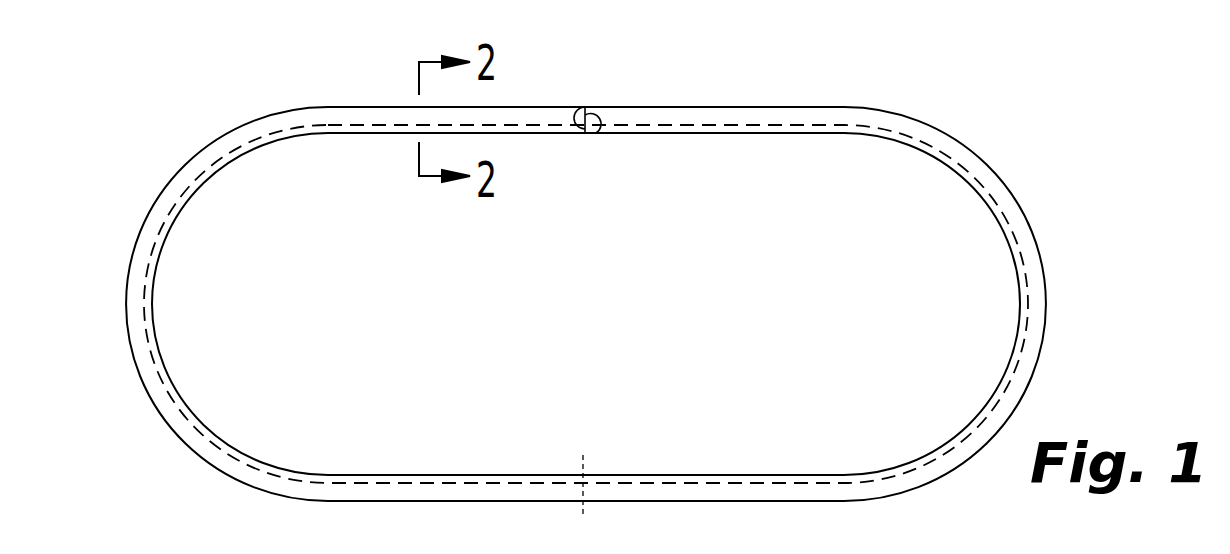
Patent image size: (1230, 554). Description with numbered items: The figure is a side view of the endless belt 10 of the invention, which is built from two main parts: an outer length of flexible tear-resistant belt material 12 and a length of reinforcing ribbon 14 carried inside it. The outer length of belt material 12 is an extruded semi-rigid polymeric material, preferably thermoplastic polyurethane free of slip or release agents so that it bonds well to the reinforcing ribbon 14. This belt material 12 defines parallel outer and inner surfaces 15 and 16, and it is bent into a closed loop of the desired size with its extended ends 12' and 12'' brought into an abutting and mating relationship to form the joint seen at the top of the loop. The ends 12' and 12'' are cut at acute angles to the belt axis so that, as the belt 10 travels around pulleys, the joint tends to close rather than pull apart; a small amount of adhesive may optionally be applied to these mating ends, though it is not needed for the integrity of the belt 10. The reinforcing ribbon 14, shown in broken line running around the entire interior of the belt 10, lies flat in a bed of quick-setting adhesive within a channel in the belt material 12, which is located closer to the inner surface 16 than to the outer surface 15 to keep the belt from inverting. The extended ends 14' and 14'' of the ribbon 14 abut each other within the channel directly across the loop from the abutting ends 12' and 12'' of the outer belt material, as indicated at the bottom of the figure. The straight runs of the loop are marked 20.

The endless belt 10 is at (962, 100).
The outer length of flexible tear-resistant belt material 12 is at (586, 304).
The extended end of belt material 12' is at (615, 102).
The extended end of belt material 12'' is at (569, 148).
The reinforcing ribbon 14 is at (586, 304).
The extended end of reinforcing ribbon 14' is at (594, 480).
The extended end of reinforcing ribbon 14'' is at (546, 520).
The outer surface 15 is at (362, 106).
The inner surface 16 is at (377, 135).
The straight track section 20 is at (617, 527).